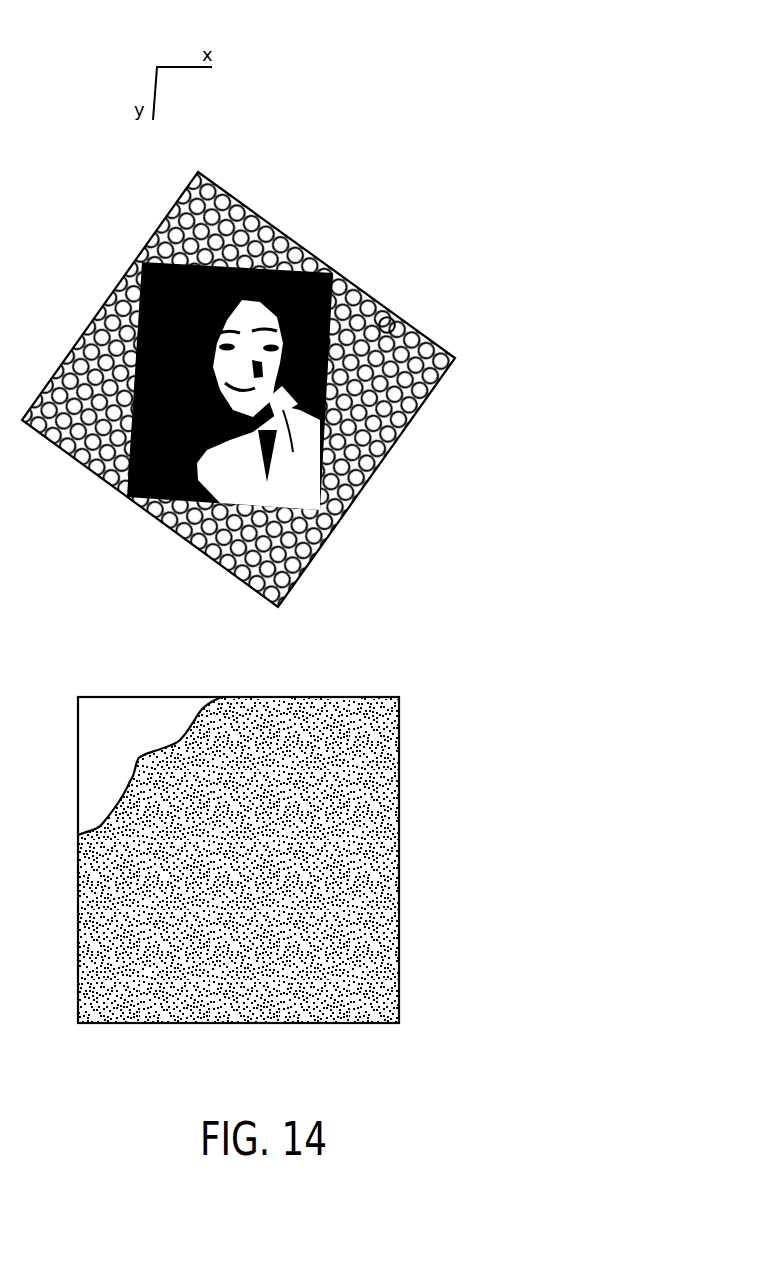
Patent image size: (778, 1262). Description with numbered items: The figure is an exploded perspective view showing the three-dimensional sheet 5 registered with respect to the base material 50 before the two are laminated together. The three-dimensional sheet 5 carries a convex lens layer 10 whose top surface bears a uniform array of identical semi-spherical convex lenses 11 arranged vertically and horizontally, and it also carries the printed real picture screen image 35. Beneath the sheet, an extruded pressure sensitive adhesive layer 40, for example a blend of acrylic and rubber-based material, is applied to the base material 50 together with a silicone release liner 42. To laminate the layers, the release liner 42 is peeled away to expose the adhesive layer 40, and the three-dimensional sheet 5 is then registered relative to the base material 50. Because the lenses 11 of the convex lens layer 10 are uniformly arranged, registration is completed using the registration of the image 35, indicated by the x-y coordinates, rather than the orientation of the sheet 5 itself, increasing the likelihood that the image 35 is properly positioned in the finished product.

The three-dimensional sheet 5 is at (453, 342).
The convex lens layer 10 is at (318, 245).
The convex lenses 11 is at (387, 325).
The real picture screen image 35 is at (307, 440).
The adhesive layer 40 is at (347, 890).
The release liner 42 is at (97, 782).
The base material 50 is at (402, 758).